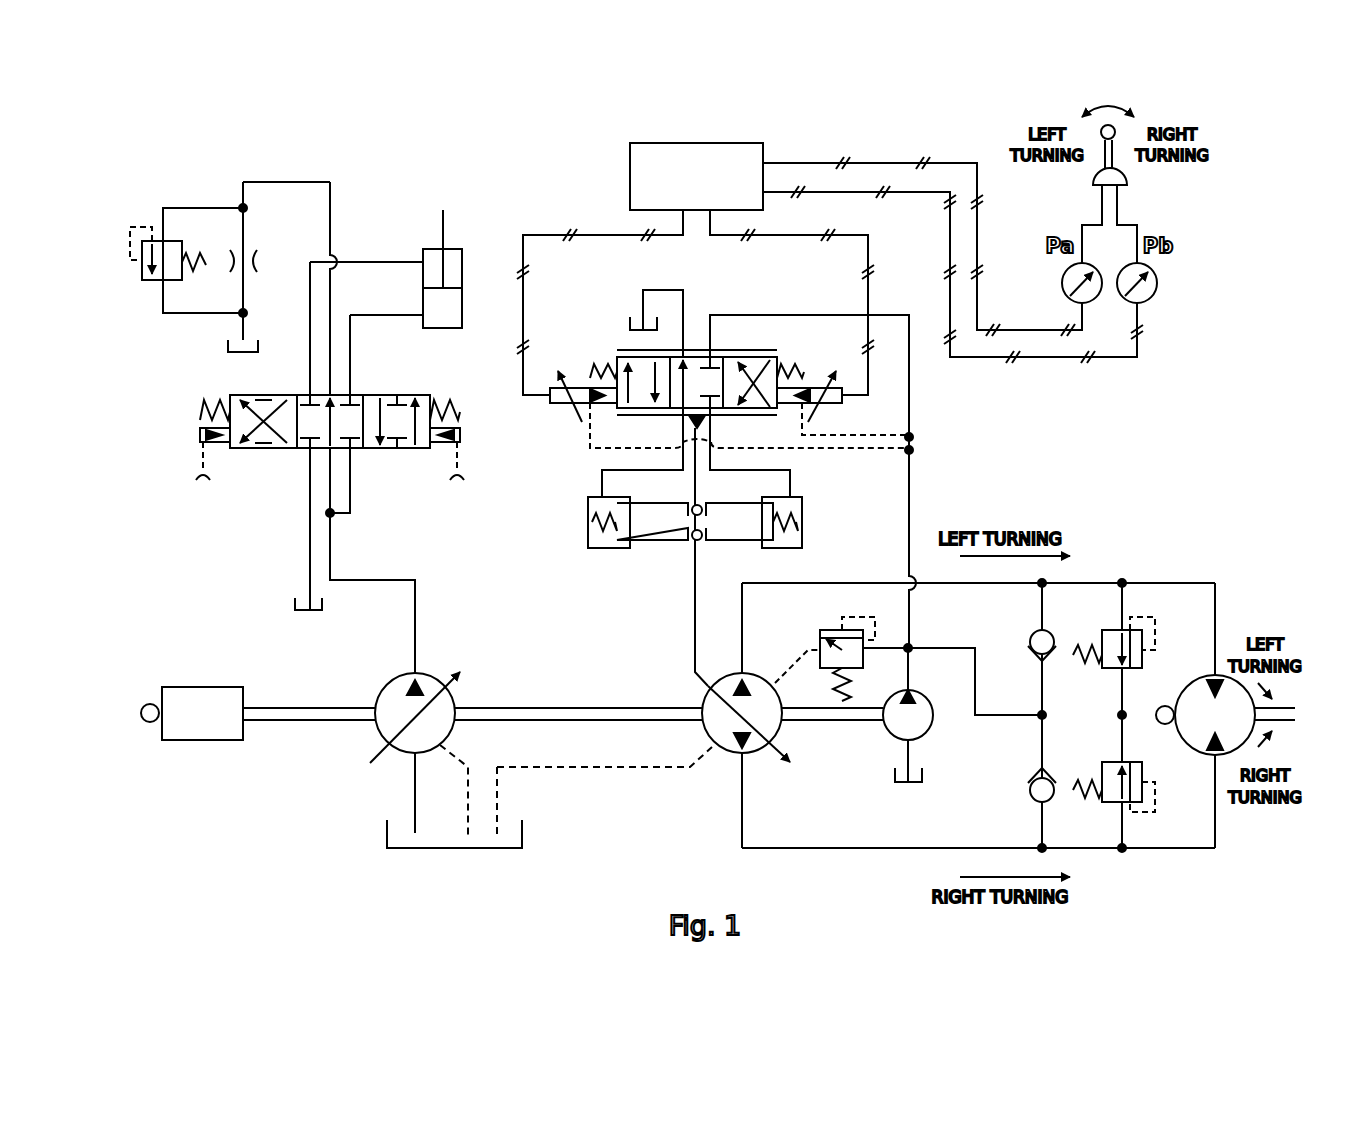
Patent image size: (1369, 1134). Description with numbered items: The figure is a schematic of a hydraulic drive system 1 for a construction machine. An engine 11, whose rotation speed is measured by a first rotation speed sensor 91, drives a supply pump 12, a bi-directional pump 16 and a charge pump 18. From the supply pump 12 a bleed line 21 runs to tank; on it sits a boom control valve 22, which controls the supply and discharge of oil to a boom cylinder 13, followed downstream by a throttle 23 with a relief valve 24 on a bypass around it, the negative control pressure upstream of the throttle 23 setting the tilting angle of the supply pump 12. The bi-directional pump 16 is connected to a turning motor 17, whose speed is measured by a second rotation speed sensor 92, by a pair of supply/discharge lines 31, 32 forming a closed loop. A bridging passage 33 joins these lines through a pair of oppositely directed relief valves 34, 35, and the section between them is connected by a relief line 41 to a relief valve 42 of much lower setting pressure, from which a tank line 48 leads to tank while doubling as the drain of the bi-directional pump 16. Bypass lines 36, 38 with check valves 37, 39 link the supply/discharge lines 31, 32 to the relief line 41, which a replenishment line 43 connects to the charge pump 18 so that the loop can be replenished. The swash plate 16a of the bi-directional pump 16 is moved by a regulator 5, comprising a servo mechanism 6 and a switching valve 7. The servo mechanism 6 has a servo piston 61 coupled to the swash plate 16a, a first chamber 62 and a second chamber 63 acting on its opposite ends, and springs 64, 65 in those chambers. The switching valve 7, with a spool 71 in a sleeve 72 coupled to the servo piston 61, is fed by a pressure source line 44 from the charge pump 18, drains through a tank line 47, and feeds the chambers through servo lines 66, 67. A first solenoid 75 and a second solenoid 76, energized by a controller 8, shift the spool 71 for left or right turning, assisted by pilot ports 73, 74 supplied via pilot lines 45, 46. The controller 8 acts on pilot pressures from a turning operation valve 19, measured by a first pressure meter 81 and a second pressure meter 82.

The hydraulic drive system 1 is at (1108, 435).
The regulator 5 is at (698, 524).
The servo mechanism 6 is at (691, 569).
The switching valve 7 is at (740, 388).
The controller 8 is at (630, 165).
The engine 11 is at (215, 740).
The supply pump 12 is at (398, 745).
The boom cylinder 13 is at (462, 255).
The bi-directional pump 16 is at (728, 755).
The swash plate 16a is at (707, 690).
The turning motor 17 is at (1180, 750).
The charge pump 18 is at (893, 738).
The turning operation valve 19 is at (1127, 178).
The bleed line 21 is at (385, 580).
The boom control valve 22 is at (272, 450).
The throttle 23 is at (258, 262).
The relief valve 24 is at (142, 268).
The supply/discharge line 31 is at (1170, 583).
The supply/discharge line 32 is at (1172, 848).
The bridging passage 33 is at (1120, 612).
The relief valve 34 is at (1108, 670).
The relief valve 35 is at (1107, 762).
The bypass line 36 is at (1040, 610).
The check valve 37 is at (1033, 637).
The bypass line 38 is at (1040, 745).
The check valve 39 is at (1033, 796).
The relief line 41 is at (1020, 715).
The relief valve 42 is at (825, 632).
The replenishment line 43 is at (908, 665).
The pressure source line 44 is at (910, 512).
The pilot line 45 is at (915, 465).
The pilot line 46 is at (915, 435).
The tank line 47 is at (660, 292).
The tank line 48 is at (625, 772).
The servo piston 61 is at (652, 533).
The first chamber 62 is at (802, 515).
The second chamber 63 is at (590, 513).
The spring 64 is at (802, 545).
The spring 65 is at (590, 542).
The servo line 66 is at (793, 478).
The servo line 67 is at (602, 478).
The spool 71 is at (640, 355).
The sleeve 72 is at (770, 355).
The pilot port 73 is at (603, 405).
The pilot port 74 is at (800, 450).
The first solenoid 75 is at (558, 403).
The second solenoid 76 is at (822, 405).
The first pressure meter 81 is at (1062, 283).
The second pressure meter 82 is at (1157, 283).
The first rotation speed sensor 91 is at (148, 722).
The second rotation speed sensor 92 is at (1162, 706).